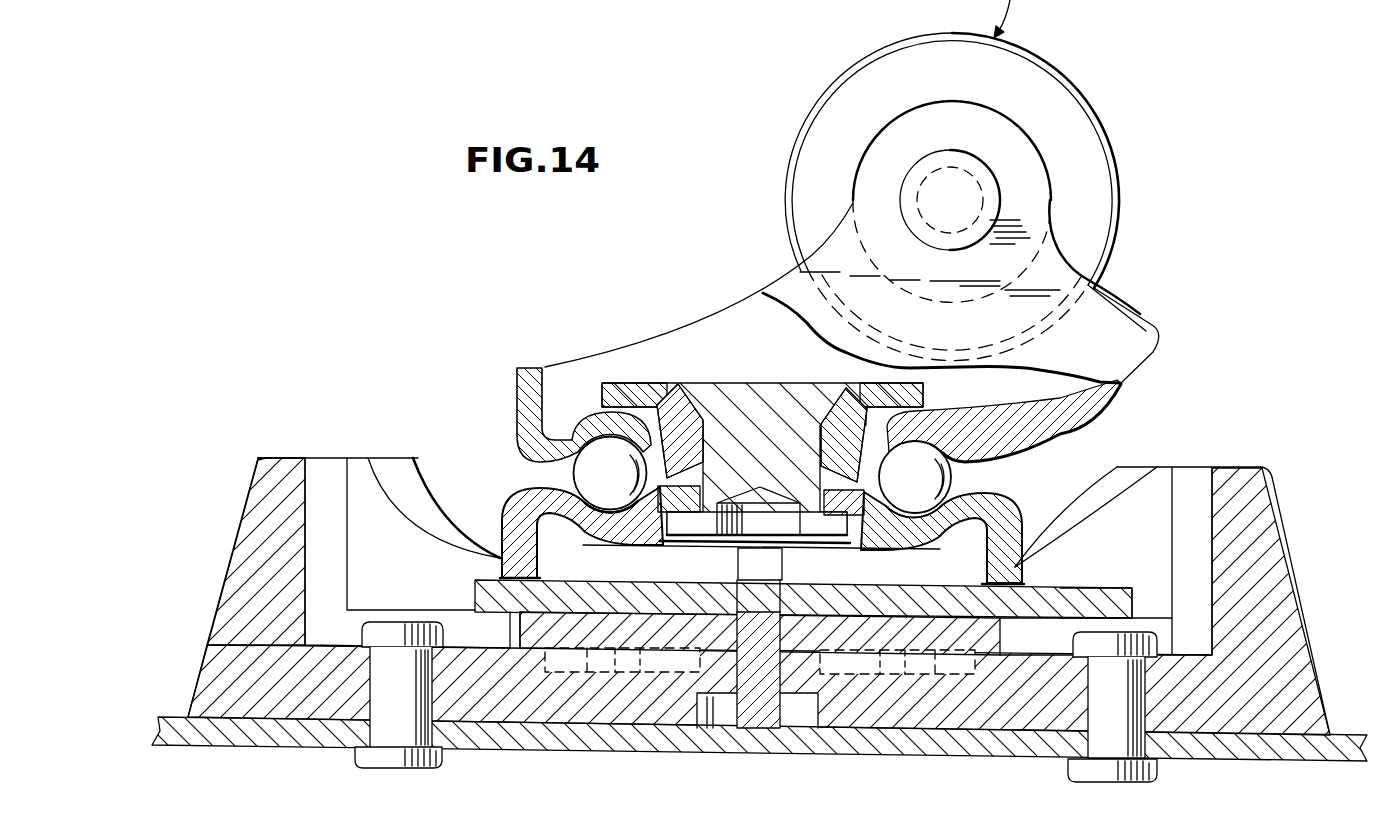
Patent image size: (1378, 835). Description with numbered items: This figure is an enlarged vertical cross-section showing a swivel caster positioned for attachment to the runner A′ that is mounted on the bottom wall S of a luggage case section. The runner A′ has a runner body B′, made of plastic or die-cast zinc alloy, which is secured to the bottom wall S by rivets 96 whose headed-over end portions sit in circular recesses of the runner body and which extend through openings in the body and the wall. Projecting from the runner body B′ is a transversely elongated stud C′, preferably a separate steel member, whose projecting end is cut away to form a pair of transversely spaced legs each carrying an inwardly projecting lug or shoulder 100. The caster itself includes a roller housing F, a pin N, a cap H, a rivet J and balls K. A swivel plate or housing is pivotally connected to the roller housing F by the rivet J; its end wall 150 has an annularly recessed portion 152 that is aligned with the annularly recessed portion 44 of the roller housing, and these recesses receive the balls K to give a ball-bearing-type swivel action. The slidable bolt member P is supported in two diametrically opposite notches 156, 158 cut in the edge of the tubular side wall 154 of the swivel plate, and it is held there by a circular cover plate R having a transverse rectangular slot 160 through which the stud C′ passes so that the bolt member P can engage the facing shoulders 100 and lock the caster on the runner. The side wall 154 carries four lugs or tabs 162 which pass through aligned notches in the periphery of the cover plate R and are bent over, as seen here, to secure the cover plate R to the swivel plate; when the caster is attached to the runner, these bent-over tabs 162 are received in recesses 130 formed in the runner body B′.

The pin N is at (1003, 178).
The cap H is at (628, 383).
The rivet J is at (745, 398).
The roller housing F is at (1140, 368).
The annularly recessed portion 44 is at (942, 438).
The balls K is at (763, 475).
The annularly recessed portion 152 is at (586, 506).
The tubular side wall 154 is at (510, 530).
The notch 156 is at (538, 577).
The end wall 150 is at (658, 535).
The transverse rectangular slot 160 is at (733, 627).
The stud C′ is at (812, 565).
The lug or shoulder 100 is at (790, 574).
The notch 158 is at (1017, 588).
The slidable bolt member P is at (1090, 592).
The circular cover plate R is at (993, 633).
The rivets 96 is at (380, 681).
The recesses 130 is at (570, 672).
The lugs or tabs 162 is at (637, 673).
The bottom wall S is at (508, 737).
The runner A′ is at (290, 418).
The runner body B′ is at (222, 541).